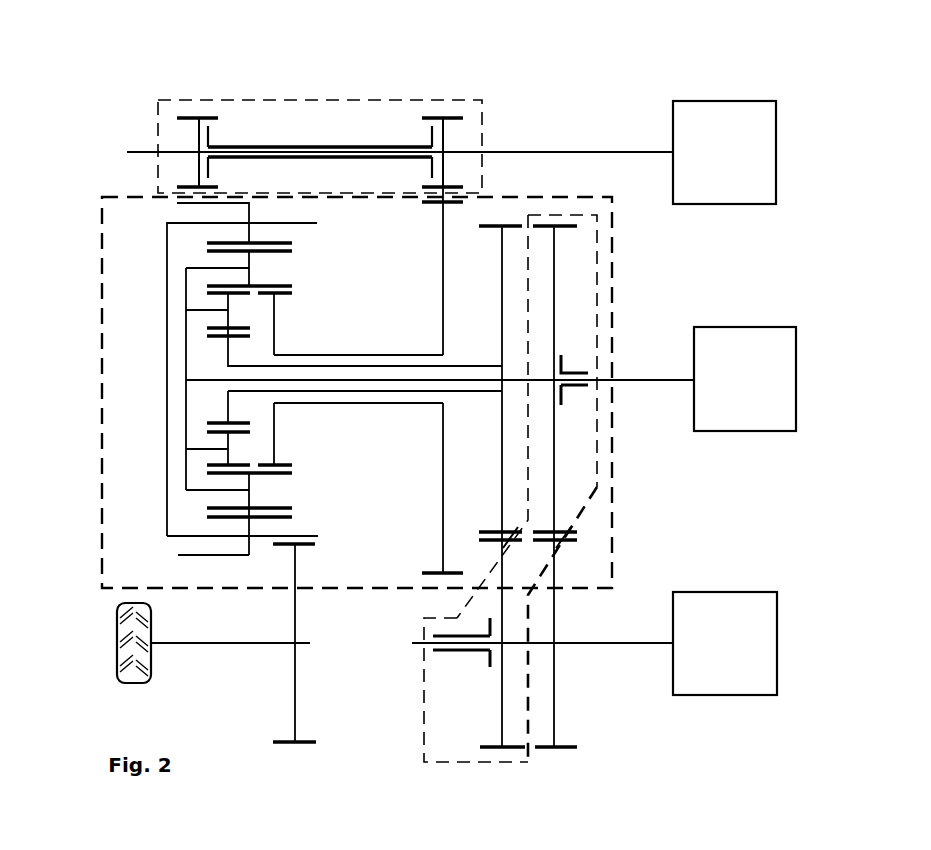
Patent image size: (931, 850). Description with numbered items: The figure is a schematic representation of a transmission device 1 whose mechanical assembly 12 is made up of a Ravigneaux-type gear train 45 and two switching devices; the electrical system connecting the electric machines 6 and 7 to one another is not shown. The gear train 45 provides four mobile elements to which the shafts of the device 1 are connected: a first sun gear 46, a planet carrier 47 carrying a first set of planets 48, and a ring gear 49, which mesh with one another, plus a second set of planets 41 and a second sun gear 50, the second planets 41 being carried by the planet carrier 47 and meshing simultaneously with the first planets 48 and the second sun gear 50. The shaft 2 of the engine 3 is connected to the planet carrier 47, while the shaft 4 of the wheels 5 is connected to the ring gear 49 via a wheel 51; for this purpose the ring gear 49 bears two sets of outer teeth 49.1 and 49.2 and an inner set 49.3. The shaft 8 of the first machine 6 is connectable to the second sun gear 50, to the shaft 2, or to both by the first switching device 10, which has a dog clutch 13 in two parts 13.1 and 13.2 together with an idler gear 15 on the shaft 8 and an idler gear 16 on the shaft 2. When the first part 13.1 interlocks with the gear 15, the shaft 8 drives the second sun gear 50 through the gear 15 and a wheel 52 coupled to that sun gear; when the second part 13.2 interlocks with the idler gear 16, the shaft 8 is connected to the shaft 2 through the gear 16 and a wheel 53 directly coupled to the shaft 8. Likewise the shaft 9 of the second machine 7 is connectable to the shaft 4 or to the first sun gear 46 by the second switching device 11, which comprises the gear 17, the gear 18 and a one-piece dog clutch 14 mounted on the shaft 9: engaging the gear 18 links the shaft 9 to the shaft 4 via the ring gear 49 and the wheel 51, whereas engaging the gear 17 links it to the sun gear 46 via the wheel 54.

The transmission device 1 is at (637, 493).
The shaft 2 is at (657, 381).
The engine 3 is at (743, 327).
The shaft of wheels 4 is at (235, 643).
The wheels 5 is at (117, 656).
The first machine 6 is at (726, 592).
The second machine 7 is at (768, 147).
The shaft 8 is at (598, 643).
The shaft 9 is at (553, 152).
The first switching device 10 is at (453, 764).
The second switching device 11 is at (382, 99).
The mechanical assembly 12 is at (102, 302).
The dog clutch 13 is at (551, 448).
The first part 13.1 is at (457, 650).
The second part 13.2 is at (577, 370).
The one-piece dog clutch 14 is at (267, 146).
The idler gear 15 is at (500, 710).
The idler gear 16 is at (556, 492).
The gear 17 is at (443, 168).
The gear 18 is at (199, 170).
The second set of planets 41 is at (230, 300).
The gear train 45 is at (371, 249).
The first sun gear 46 is at (277, 332).
The planet carrier 47 is at (187, 365).
The first set of planets 48 is at (249, 260).
The ring gear 49 is at (158, 298).
The outer teeth 49.1 is at (303, 535).
The outer teeth 49.2 is at (188, 556).
The inner set 49.3 is at (278, 504).
The second sun gear 50 is at (228, 347).
The wheel 51 is at (295, 612).
The wheel 52 is at (502, 487).
The wheel 53 is at (556, 725).
The wheel 54 is at (443, 262).